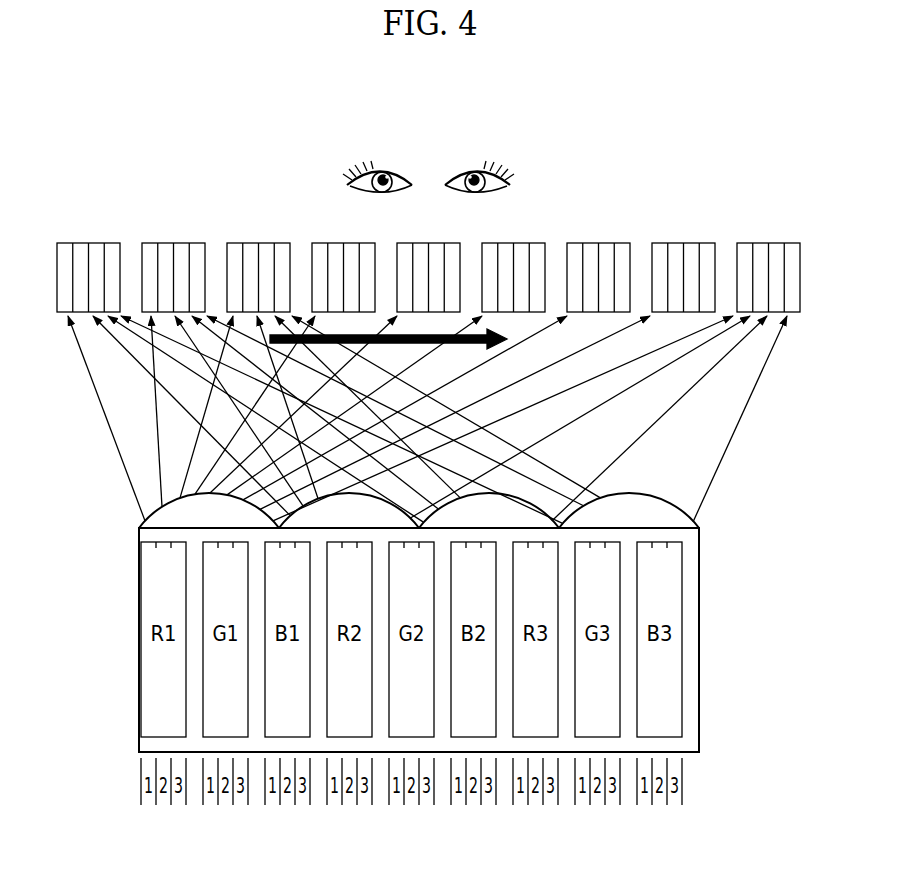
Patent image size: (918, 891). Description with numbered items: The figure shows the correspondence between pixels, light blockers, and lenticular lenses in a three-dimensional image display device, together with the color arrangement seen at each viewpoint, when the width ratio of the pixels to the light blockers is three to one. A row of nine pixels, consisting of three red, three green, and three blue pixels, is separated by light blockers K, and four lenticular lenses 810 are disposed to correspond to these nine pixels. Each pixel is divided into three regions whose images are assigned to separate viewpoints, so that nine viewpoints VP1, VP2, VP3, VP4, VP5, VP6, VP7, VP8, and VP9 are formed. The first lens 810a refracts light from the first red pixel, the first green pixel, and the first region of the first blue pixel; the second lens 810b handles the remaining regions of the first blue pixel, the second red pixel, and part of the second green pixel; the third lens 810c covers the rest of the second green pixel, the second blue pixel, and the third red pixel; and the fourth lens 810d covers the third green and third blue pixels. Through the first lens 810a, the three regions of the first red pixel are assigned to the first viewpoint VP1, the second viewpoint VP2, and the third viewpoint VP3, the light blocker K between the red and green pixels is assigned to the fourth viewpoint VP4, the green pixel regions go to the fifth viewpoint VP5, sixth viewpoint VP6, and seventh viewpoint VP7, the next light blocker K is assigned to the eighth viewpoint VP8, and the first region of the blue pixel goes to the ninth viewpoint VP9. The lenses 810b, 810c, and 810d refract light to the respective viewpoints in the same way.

The lenticular lens 810 is at (451, 509).
The first lens 810a is at (209, 510).
The second lens 810b is at (349, 510).
The third lens 810c is at (489, 510).
The fourth lens 810d is at (629, 510).
The light blocker K is at (190, 669).
The first viewpoint VP1 is at (88, 262).
The second viewpoint VP2 is at (173, 262).
The third viewpoint VP3 is at (258, 262).
The fourth viewpoint VP4 is at (343, 262).
The fifth viewpoint VP5 is at (428, 262).
The sixth viewpoint VP6 is at (513, 262).
The seventh viewpoint VP7 is at (598, 262).
The eighth viewpoint VP8 is at (683, 262).
The ninth viewpoint VP9 is at (768, 262).